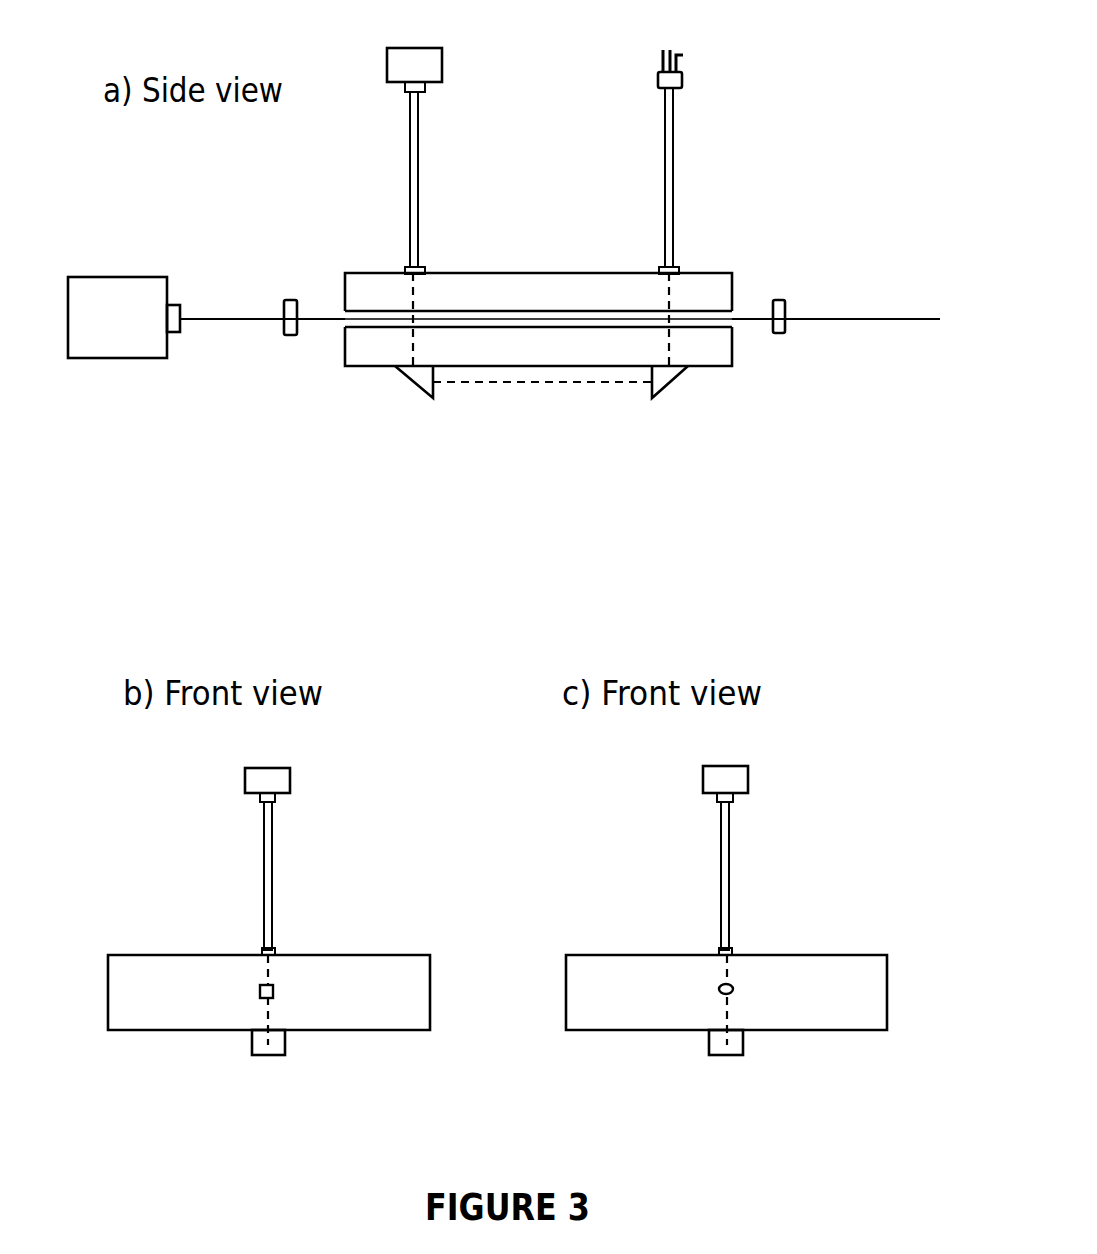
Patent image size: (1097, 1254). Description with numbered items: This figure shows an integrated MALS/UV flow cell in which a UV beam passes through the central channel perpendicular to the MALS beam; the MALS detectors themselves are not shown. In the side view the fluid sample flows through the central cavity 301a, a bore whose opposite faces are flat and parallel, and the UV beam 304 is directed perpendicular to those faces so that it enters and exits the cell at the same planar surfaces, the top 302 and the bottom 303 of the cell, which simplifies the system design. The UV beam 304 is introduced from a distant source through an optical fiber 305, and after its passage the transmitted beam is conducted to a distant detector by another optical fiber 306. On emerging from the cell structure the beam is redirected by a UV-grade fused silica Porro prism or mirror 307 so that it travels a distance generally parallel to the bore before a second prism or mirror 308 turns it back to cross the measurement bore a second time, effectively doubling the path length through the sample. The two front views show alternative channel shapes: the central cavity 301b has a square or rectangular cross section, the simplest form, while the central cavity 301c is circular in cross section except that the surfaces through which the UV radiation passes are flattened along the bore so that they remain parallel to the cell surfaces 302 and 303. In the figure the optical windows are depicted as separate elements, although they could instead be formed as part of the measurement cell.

The central cavity 301a is at (700, 328).
The central cavity of square or rectangular cross section 301b is at (277, 997).
The central cavity of circular cross section with flattened surfaces 301c is at (735, 995).
The top surface of the cell 302 is at (378, 268).
The bottom surface of the cell 303 is at (355, 368).
The UV beam 304 is at (418, 293).
The optical fiber 305 is at (428, 192).
The optical fiber 306 is at (683, 180).
The Porro prism or mirror 307 is at (420, 408).
The prism or mirror 308 is at (660, 398).